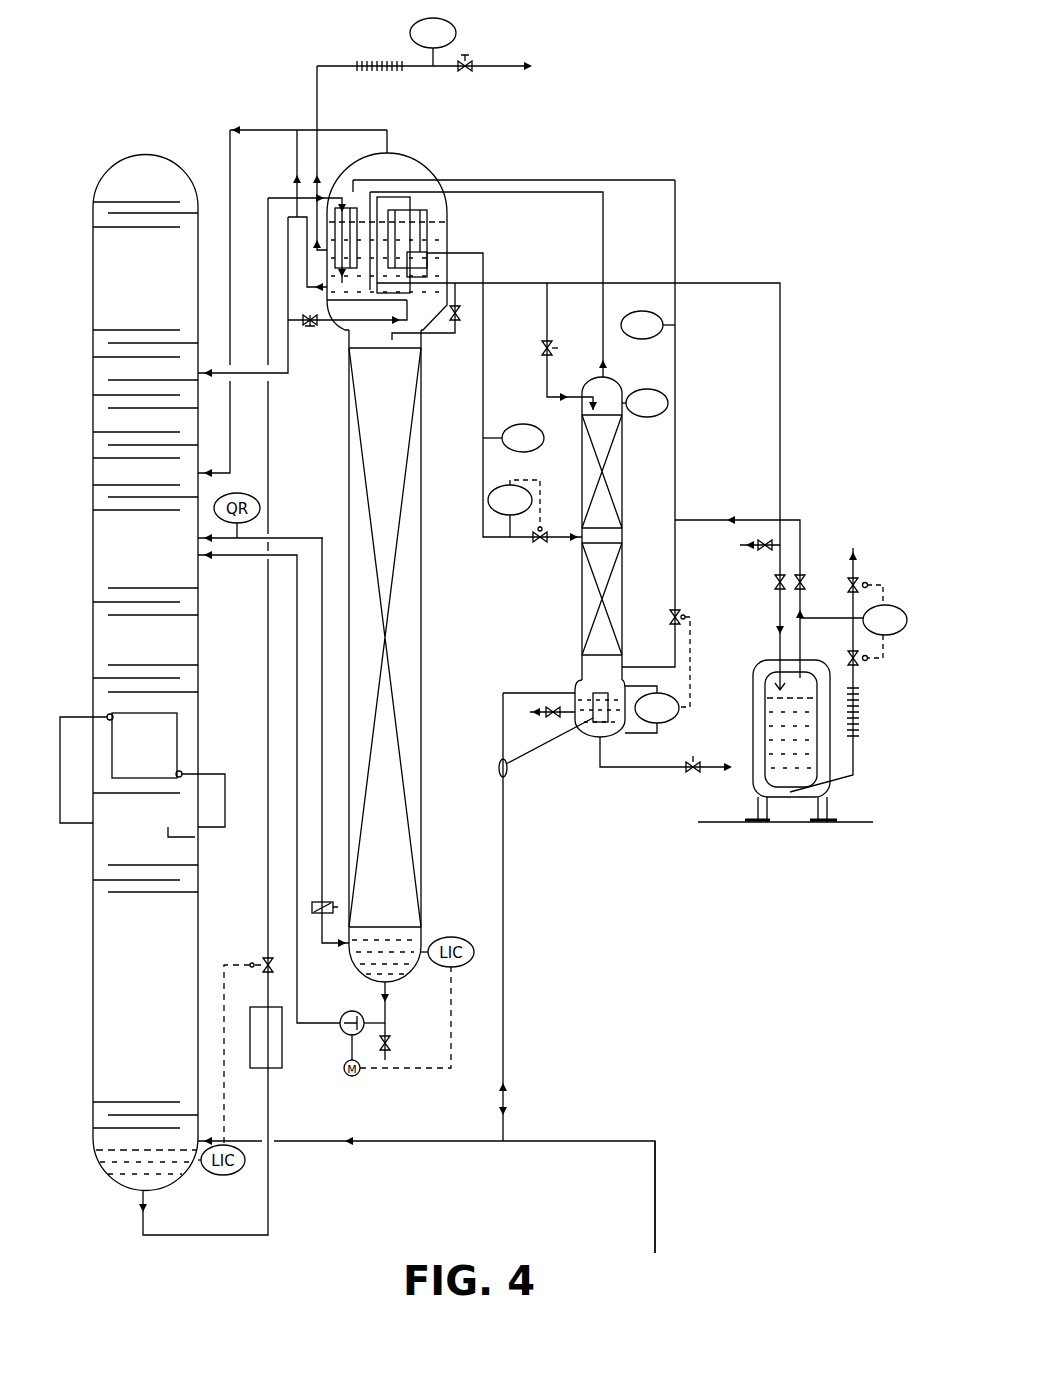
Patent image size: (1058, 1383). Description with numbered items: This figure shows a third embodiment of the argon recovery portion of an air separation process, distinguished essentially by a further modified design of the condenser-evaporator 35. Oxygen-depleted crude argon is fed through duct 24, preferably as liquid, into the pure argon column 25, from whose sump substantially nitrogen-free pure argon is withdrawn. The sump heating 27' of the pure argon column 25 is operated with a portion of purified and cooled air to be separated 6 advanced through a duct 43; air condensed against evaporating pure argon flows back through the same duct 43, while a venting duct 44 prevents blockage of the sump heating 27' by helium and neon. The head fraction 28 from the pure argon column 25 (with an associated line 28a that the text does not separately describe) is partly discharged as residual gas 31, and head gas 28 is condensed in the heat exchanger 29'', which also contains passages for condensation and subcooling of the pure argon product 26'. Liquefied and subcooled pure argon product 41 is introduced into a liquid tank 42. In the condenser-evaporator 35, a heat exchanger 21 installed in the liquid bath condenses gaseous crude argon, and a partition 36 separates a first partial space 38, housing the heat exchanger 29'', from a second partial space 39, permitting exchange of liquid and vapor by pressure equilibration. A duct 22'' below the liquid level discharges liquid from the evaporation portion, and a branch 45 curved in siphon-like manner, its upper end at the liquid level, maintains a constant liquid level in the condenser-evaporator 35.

The purified and cooled air to be separated 6 is at (656, 1203).
The heat exchanger 21 is at (430, 228).
The duct 22'' is at (243, 297).
The duct 24 is at (488, 268).
The pure argon column 25 is at (582, 590).
The pure argon product 26' is at (655, 443).
The sump heating 27' is at (631, 709).
The head fraction 28 is at (603, 222).
The branch line 28a is at (547, 333).
The heat exchanger 29'' is at (347, 307).
The residual gas 31 is at (507, 63).
The condenser-evaporator 35 is at (457, 214).
The partition 36 is at (393, 160).
The first partial space 38 is at (350, 168).
The second partial space 39 is at (393, 158).
The liquefied and subcooled pure argon product 41 is at (781, 365).
The liquid tank 42 is at (760, 660).
The duct 43 is at (504, 812).
The venting duct 44 is at (575, 723).
The branch curved in siphon-like manner 45 is at (288, 240).